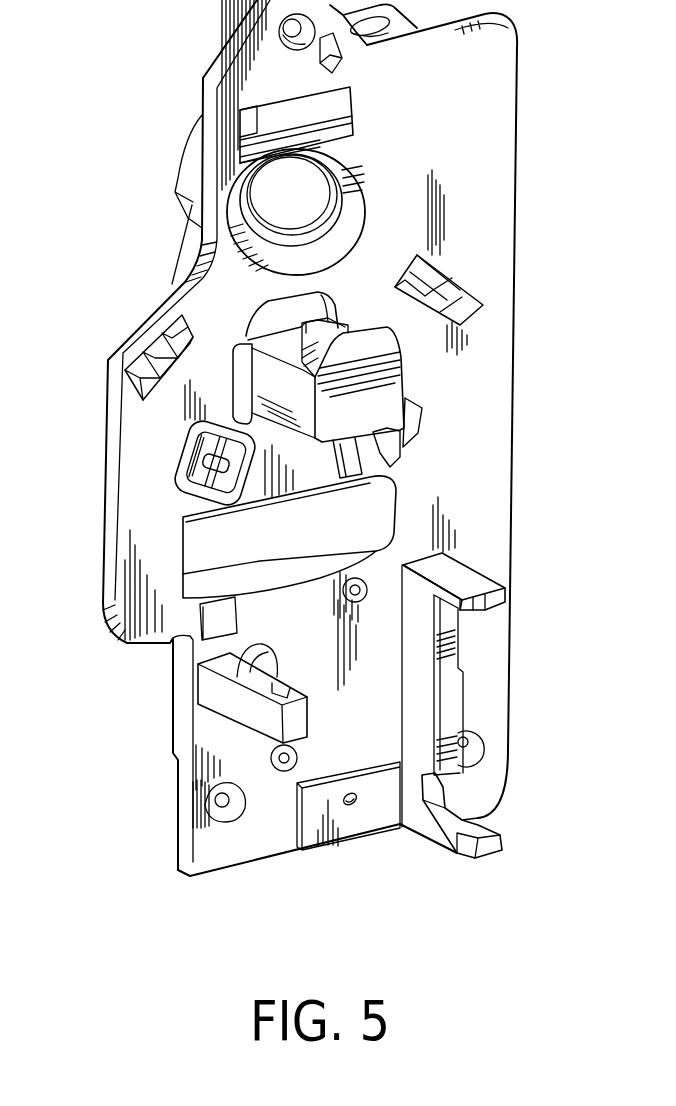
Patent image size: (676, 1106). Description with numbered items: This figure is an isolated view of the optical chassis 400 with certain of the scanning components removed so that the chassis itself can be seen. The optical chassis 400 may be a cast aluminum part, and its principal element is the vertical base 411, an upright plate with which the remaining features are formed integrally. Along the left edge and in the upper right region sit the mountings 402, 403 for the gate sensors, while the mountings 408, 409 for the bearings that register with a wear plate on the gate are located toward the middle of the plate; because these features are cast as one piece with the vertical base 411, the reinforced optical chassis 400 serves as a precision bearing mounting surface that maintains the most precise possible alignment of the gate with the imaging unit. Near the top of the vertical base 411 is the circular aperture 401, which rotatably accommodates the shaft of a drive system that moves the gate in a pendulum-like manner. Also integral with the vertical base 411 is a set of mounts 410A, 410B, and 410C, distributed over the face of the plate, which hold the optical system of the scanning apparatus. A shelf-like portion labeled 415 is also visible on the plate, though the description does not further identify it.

The optical chassis 400 is at (183, 80).
The circular aperture 401 is at (322, 178).
The mounting for gate sensor 402 is at (157, 318).
The mounting for gate sensor 403 is at (443, 262).
The bearing mounting 408 is at (173, 478).
The bearing mounting 409 is at (407, 433).
The mount 410A is at (387, 353).
The mount 410B is at (472, 578).
The mount 410C is at (277, 690).
The vertical base 411 is at (474, 75).
The shelf 415 is at (288, 544).